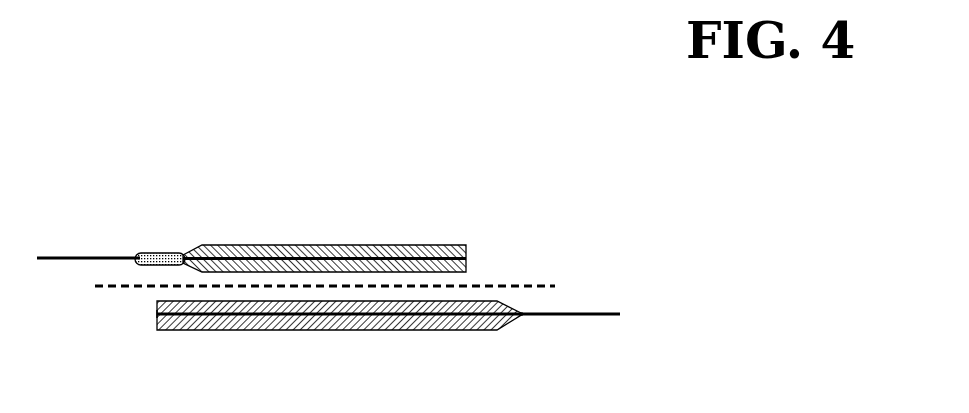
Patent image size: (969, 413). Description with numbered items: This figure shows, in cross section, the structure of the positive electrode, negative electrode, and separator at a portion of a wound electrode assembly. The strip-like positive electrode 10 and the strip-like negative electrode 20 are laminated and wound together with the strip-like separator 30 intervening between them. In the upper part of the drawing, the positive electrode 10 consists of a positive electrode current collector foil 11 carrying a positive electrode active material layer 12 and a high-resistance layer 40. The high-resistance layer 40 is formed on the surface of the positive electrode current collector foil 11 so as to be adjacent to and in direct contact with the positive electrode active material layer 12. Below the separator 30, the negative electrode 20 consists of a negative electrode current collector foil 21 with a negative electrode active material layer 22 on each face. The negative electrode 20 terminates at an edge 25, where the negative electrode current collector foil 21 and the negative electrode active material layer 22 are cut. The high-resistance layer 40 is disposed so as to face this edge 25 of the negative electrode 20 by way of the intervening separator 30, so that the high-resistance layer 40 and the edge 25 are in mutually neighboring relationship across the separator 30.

The positive electrode 10 is at (265, 226).
The positive electrode current collector foil 11 is at (85, 257).
The positive electrode active material layer 12 is at (303, 245).
The high-resistance layer 40 is at (160, 252).
The separator 30 is at (522, 286).
The negative electrode 20 is at (346, 344).
The negative electrode current collector foil 21 is at (548, 318).
The negative electrode active material layer 22 is at (290, 330).
The edge of negative electrode 25 is at (157, 314).